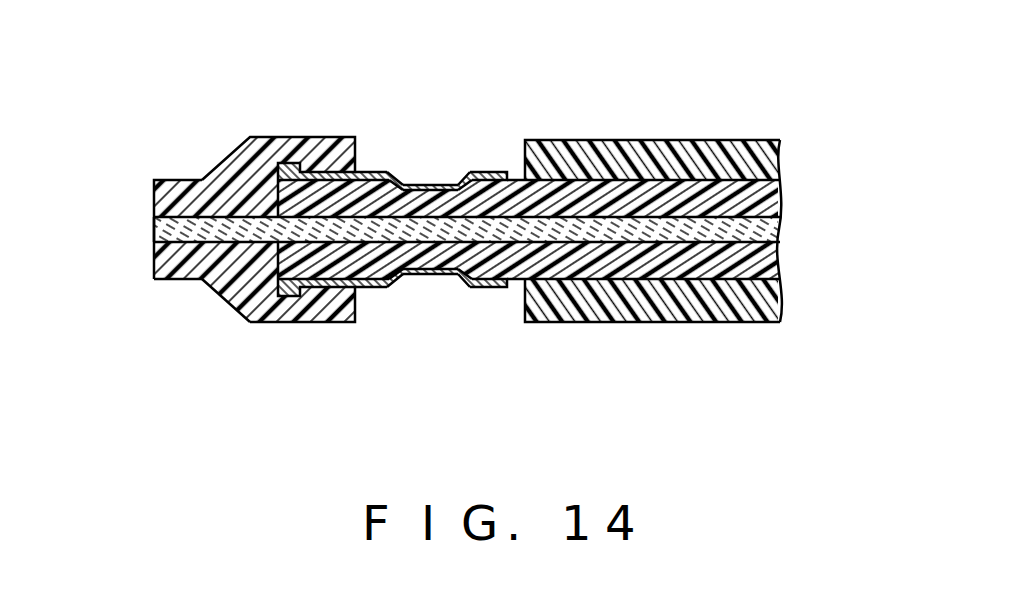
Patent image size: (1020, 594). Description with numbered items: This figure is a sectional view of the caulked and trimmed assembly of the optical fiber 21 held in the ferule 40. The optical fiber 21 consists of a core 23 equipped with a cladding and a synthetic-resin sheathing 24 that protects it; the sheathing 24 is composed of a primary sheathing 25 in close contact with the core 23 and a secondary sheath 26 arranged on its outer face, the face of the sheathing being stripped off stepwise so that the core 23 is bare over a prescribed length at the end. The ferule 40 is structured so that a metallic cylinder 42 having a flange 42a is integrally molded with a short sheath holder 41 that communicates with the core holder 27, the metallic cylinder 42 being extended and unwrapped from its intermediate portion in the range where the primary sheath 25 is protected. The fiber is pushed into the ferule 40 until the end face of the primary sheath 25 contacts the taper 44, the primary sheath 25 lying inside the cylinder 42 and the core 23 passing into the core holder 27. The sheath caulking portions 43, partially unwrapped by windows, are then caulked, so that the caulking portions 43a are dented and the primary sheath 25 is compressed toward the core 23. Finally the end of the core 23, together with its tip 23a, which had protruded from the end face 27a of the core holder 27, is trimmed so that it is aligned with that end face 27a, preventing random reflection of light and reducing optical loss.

The optical fiber 21 is at (461, 229).
The core 23 is at (461, 215).
The end of center conductor 23a is at (152, 218).
The sheathing 24 is at (529, 293).
The primary sheathing 25 is at (588, 263).
The secondary sheath 26 is at (578, 395).
The core holder 27 is at (159, 208).
The end face of the core holder 27a is at (153, 262).
The ferule 40 is at (197, 218).
The sheath holder 41 is at (240, 356).
The metallic cylinder 42 is at (418, 216).
The flange 42a is at (291, 163).
The sheath caulking portions 43 is at (422, 182).
The caulking portions 43a is at (440, 183).
The taper 44 is at (225, 300).